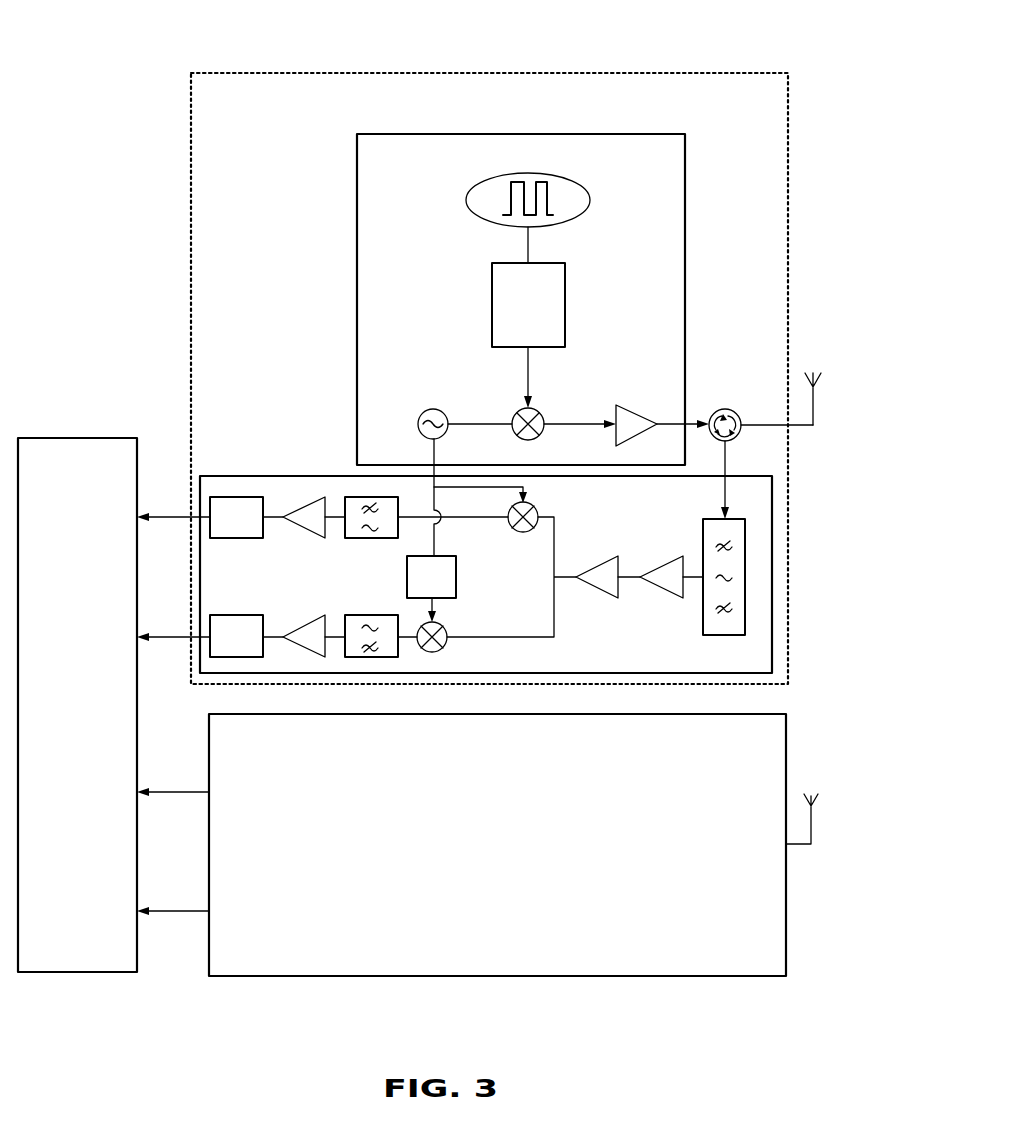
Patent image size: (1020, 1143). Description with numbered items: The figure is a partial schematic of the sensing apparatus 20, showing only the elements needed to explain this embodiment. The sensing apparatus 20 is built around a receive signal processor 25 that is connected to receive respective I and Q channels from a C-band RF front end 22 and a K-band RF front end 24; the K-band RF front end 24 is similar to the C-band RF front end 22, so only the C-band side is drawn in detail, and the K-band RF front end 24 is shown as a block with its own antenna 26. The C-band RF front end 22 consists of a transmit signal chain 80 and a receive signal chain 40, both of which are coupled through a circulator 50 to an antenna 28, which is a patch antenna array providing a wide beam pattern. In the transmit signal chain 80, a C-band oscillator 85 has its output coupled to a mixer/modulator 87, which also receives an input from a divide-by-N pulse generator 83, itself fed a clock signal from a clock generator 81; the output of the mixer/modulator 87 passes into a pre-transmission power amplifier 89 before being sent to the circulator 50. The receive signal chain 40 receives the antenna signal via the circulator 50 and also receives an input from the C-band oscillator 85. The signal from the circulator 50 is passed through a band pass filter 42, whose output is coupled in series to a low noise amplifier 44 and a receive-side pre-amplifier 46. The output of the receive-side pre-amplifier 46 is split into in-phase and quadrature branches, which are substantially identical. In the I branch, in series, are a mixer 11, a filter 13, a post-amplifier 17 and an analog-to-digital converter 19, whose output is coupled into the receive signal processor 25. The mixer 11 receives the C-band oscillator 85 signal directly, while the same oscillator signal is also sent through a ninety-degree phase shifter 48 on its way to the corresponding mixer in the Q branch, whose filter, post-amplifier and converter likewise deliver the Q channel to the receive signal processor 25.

The sensing apparatus 20 is at (183, 27).
The C-band RF front end 22 is at (210, 122).
The K-band RF front end 24 is at (509, 869).
The receive signal processor 25 is at (90, 748).
The K-band antenna 26 is at (811, 838).
The antenna 28 is at (813, 408).
The receive signal chain 40 is at (768, 670).
The band pass filter 42 is at (703, 540).
The low noise amplifier 44 is at (661, 589).
The receive-side pre-amplifier 46 is at (596, 589).
The 90-degree phase shifter 48 is at (456, 575).
The circulator 50 is at (731, 408).
The mixer 11 is at (518, 532).
The filter 13 is at (369, 540).
The post-amplifier 17 is at (303, 530).
The analog-to-digital converter 19 is at (235, 540).
The transmit signal chain 80 is at (383, 162).
The clock generator 81 is at (590, 196).
The divide-by-N pulse generator 83 is at (565, 303).
The C-band oscillator 85 is at (440, 407).
The mixer/modulator 87 is at (541, 412).
The pre-transmission power amplifier 89 is at (633, 407).